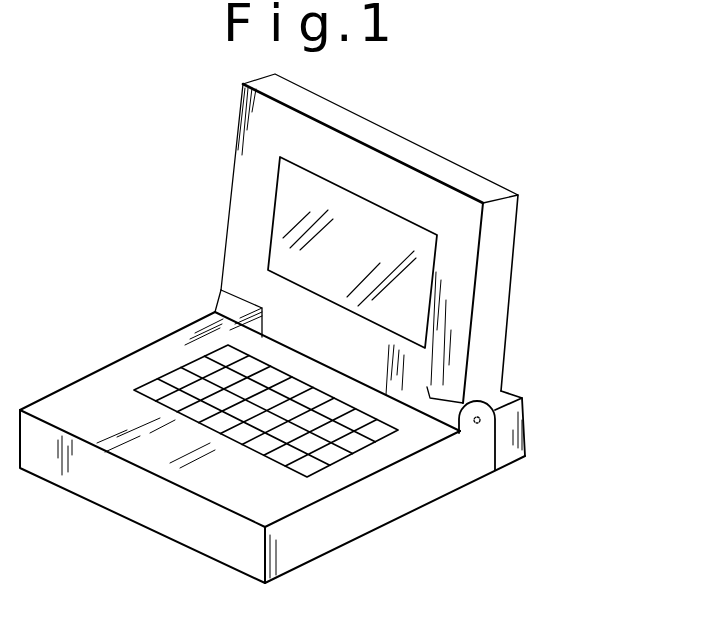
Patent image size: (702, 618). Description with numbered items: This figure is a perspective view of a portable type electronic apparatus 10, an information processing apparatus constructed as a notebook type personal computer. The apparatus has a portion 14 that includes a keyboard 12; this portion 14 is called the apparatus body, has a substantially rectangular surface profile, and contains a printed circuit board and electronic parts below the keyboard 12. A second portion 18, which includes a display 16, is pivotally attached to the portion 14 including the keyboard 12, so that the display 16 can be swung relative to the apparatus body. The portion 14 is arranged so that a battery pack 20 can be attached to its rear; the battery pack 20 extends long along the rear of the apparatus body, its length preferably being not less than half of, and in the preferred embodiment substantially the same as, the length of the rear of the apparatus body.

The portable type electronic apparatus 10 is at (540, 255).
The keyboard 12 is at (347, 445).
The portion including the keyboard 14 is at (400, 443).
The display 16 is at (378, 233).
The portion including the display 18 is at (432, 198).
The battery pack 20 is at (505, 400).